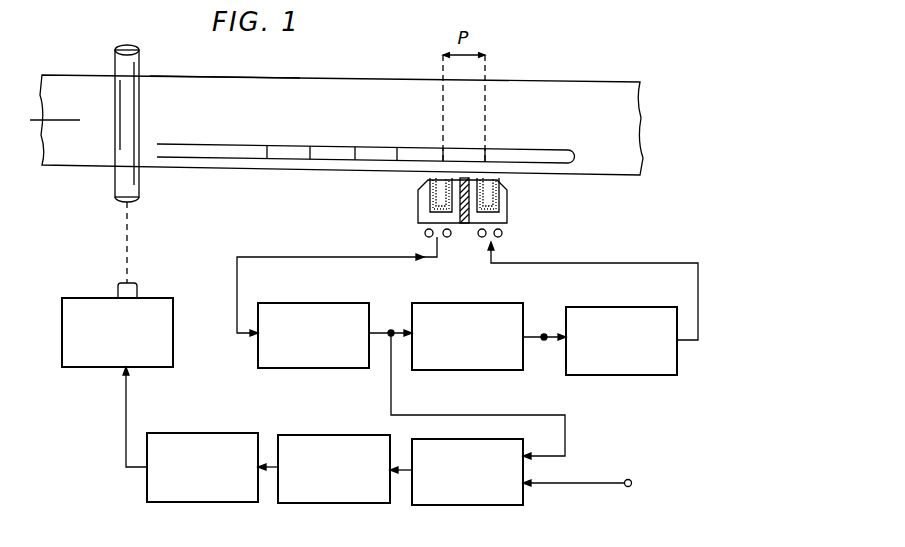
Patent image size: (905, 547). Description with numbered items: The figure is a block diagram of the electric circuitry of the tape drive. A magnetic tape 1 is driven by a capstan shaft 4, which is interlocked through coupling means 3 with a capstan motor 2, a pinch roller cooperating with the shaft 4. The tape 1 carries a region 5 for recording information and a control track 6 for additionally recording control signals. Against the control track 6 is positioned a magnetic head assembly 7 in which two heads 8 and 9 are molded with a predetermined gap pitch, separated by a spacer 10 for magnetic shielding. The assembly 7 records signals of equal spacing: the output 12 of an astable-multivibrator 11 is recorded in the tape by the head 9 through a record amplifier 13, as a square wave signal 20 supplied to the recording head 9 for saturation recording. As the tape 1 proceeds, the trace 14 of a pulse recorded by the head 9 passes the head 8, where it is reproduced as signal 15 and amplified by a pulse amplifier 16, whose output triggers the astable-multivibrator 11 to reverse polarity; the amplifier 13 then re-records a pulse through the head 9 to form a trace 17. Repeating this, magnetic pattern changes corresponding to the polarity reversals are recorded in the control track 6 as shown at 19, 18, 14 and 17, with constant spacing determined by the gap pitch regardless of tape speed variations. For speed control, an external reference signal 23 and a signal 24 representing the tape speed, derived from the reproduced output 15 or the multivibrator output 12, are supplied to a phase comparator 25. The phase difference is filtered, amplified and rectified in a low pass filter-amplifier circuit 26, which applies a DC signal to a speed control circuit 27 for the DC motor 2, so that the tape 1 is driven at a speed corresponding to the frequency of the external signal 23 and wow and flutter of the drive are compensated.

The magnetic tape 1 is at (593, 80).
The capstan motor 2 is at (155, 298).
The coupling means 3 is at (125, 241).
The capstan shaft 4 is at (140, 60).
The region for recording information 5 is at (213, 78).
The control track 6 is at (572, 165).
The magnetic head assembly 7 is at (418, 221).
The reproducing head 8 is at (433, 210).
The recording head 9 is at (500, 200).
The spacer 10 is at (463, 227).
The astable-multivibrator 11 is at (481, 303).
The output of the astable-multivibrator 12 is at (544, 334).
The record amplifier 13 is at (662, 307).
The trace of a pulse signal 14 is at (438, 148).
The reproduced output signal 15 is at (290, 257).
The pulse amplifier 16 is at (357, 303).
The trace 17 is at (490, 150).
The recorded magnetic pattern change 18 is at (396, 162).
The recorded magnetic pattern change 19 is at (357, 162).
The square wave signal 20 is at (686, 341).
The external reference signal 23 is at (631, 482).
The signal to be compared 24 is at (566, 430).
The phase comparator 25 is at (495, 505).
The low pass filter-amplifier circuit 26 is at (360, 503).
The speed control circuit 27 is at (218, 502).